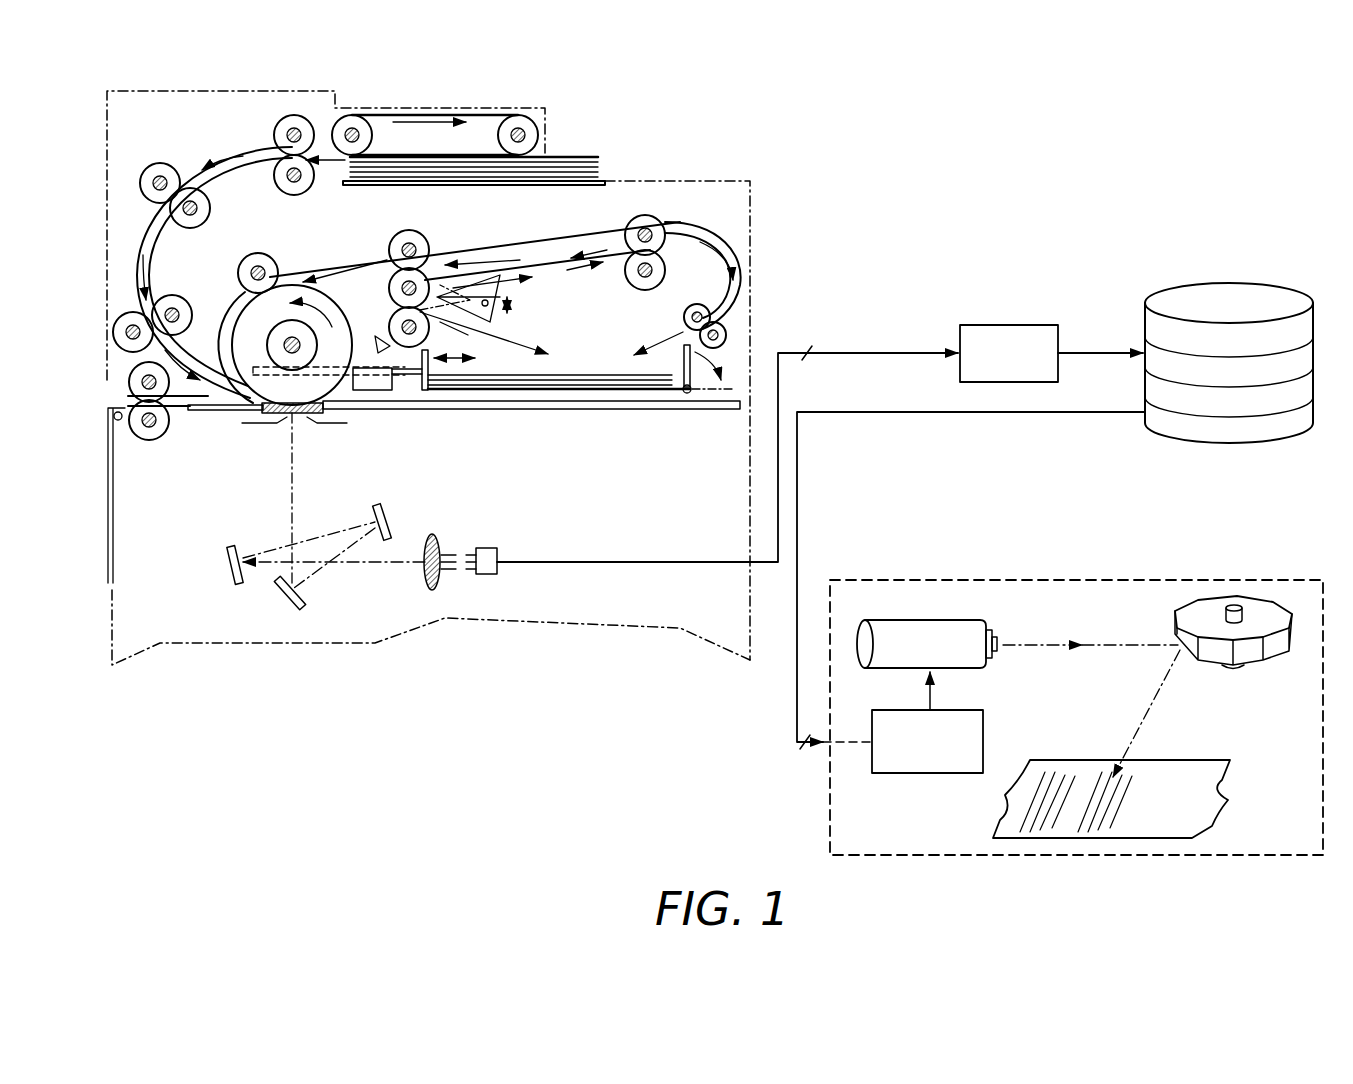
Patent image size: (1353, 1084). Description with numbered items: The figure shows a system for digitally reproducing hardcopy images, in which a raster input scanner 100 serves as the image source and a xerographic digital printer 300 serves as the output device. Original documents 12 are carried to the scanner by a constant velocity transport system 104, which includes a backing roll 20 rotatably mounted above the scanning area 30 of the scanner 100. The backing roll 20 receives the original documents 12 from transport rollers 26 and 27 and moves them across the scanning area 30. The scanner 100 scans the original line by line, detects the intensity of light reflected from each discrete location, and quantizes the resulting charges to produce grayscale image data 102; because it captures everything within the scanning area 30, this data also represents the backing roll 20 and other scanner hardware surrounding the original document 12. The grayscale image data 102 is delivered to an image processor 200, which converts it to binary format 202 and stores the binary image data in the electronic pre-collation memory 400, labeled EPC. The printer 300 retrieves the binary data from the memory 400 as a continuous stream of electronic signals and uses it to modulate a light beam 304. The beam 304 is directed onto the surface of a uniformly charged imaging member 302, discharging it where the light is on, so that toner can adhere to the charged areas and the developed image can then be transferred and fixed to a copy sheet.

The original documents 12 is at (590, 156).
The backing roll 20 is at (228, 303).
The transport roller 26 is at (250, 296).
The transport roller 27 is at (122, 333).
The scanning area 30 is at (290, 415).
The raster input scanner 100 is at (423, 503).
The grayscale image data 102 is at (586, 563).
The constant velocity transport system 104 is at (680, 238).
The image processor 200 is at (1030, 366).
The binary format image data 202 is at (1070, 355).
The xerographic digital printer 300 is at (1078, 578).
The imaging member 302 is at (1200, 820).
The light beam 304 is at (1150, 720).
The electronic pre-collation memory 400 is at (1295, 257).